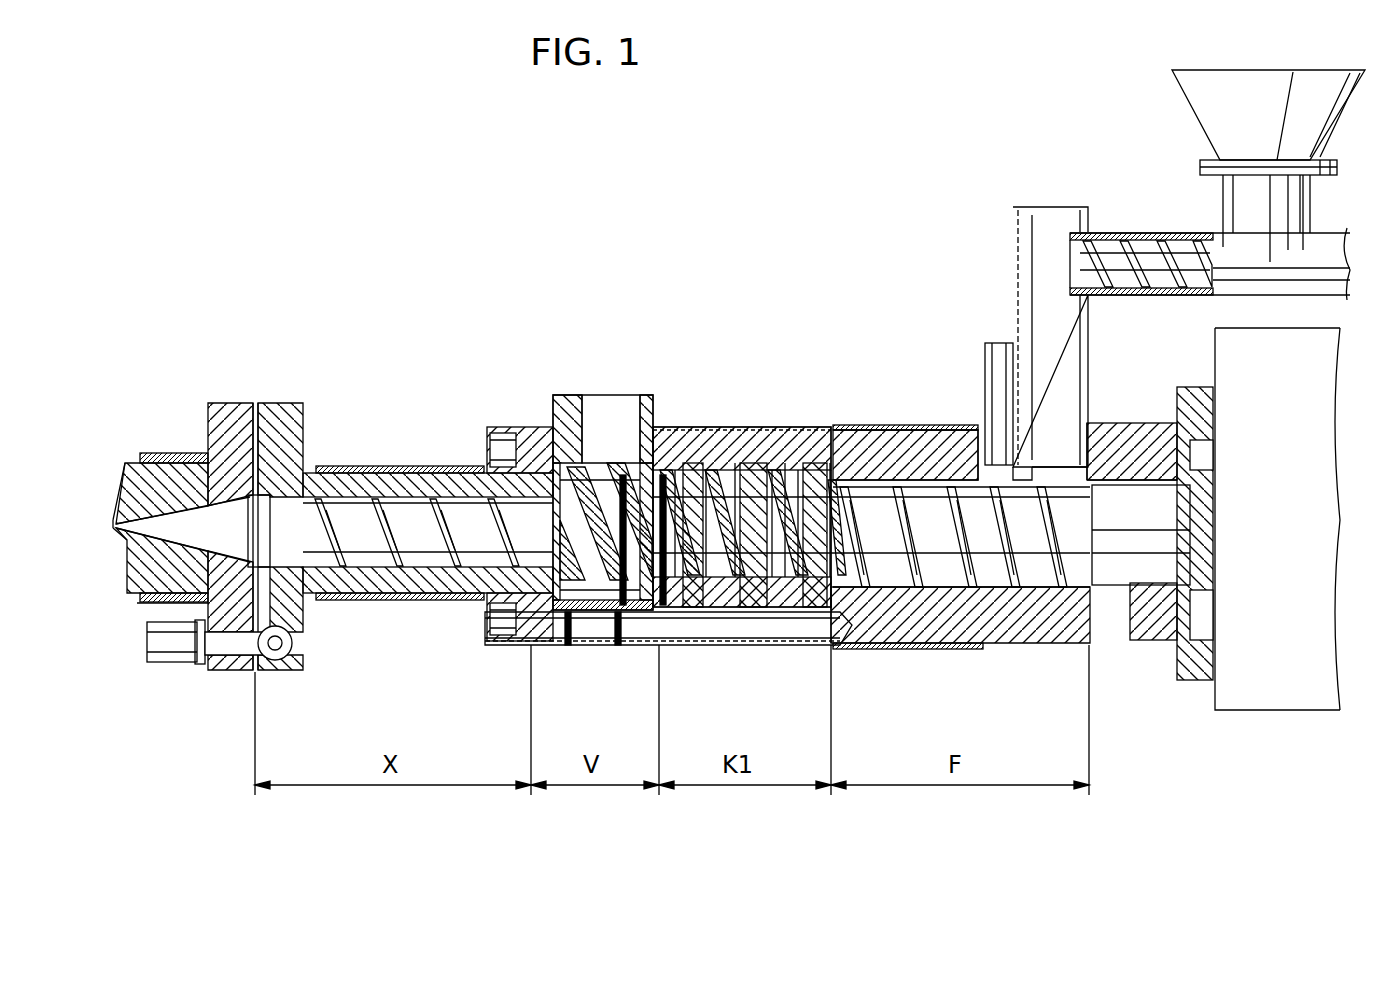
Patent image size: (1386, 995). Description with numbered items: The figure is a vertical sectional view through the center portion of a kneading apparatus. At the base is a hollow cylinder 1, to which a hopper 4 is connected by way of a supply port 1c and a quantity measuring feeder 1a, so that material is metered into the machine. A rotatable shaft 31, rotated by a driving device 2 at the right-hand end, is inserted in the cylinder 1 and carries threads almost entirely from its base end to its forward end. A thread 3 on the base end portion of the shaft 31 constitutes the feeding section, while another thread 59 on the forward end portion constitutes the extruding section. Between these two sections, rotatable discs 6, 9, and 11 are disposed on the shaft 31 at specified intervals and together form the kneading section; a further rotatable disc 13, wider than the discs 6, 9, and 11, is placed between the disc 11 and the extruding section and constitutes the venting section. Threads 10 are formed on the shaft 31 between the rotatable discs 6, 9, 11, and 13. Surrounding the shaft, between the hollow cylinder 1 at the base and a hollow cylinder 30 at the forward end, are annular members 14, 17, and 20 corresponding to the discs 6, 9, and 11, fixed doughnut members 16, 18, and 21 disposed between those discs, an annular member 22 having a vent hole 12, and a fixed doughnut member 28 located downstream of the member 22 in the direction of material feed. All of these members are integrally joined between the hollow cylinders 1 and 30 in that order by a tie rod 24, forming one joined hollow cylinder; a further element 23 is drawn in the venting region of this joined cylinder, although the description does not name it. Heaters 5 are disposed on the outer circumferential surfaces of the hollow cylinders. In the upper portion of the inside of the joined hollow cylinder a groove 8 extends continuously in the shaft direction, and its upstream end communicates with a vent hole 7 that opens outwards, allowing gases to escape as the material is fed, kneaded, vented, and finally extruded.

The cylinder 1 is at (895, 427).
The quantity measuring feeder 1a is at (1137, 230).
The supply port 1c is at (1053, 365).
The driving device 2 is at (1240, 370).
The thread 3 is at (1045, 580).
The hopper 4 is at (1215, 122).
The heaters 5 is at (345, 600).
The rotatable disc 6 is at (870, 427).
The vent hole 7 is at (985, 383).
The groove 8 is at (915, 427).
The rotatable disc 9 is at (770, 427).
The threads 10 is at (700, 612).
The rotatable disc 11 is at (735, 427).
The vent hole 12 is at (595, 405).
The rotatable disc 13 is at (588, 645).
The annular member 14 is at (835, 427).
The fixed doughnut member 16 is at (812, 427).
The annular member 17 is at (790, 427).
The fixed doughnut member 18 is at (755, 427).
The annular member 20 is at (717, 427).
The fixed doughnut member 21 is at (663, 427).
The annular member 22 is at (650, 427).
The spacer 23 is at (687, 427).
The tie rod 24 is at (518, 645).
The fixed doughnut member 28 is at (530, 430).
The hollow cylinder 30 is at (418, 580).
The rotatable shaft 31 is at (1152, 565).
The thread 59 is at (420, 520).